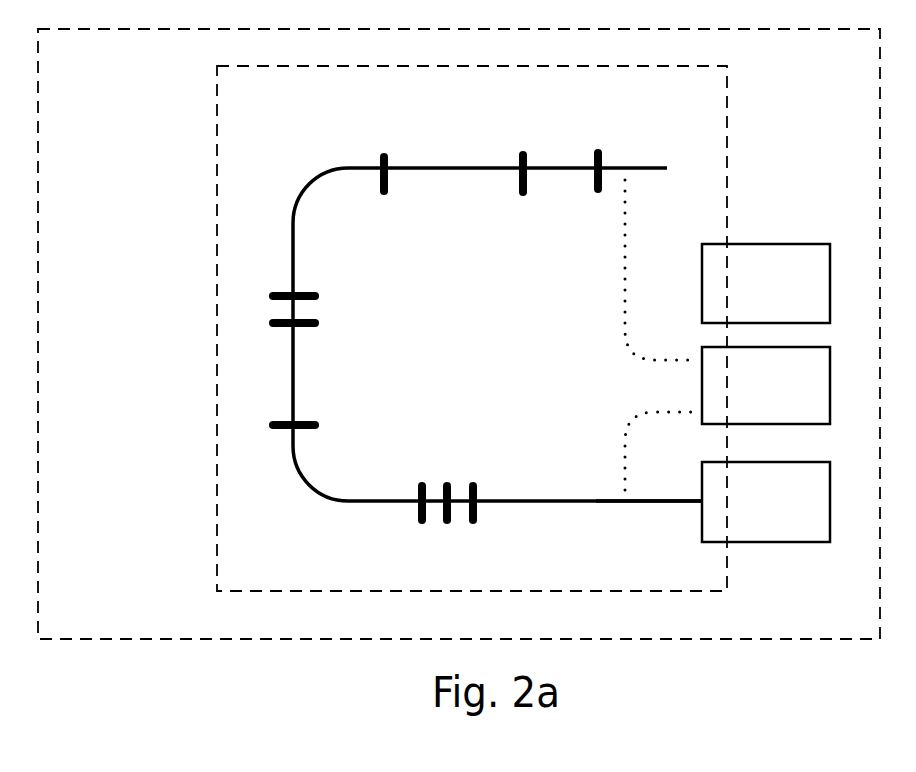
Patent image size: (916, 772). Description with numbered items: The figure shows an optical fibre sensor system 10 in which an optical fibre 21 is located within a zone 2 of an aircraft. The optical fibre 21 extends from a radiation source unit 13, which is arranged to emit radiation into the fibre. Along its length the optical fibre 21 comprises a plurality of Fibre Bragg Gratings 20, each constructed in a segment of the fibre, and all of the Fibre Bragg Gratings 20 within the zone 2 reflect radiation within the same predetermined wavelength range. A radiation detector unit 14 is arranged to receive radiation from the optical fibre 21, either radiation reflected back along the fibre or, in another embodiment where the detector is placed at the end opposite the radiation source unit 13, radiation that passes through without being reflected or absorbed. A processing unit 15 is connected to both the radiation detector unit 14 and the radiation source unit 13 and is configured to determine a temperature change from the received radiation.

The optical fibre sensor system 10 is at (120, 139).
The zone 2 is at (274, 139).
The radiation source unit 13 is at (752, 516).
The radiation detector unit 14 is at (752, 399).
The processing unit 15 is at (752, 297).
The Fibre Bragg Gratings 20 is at (580, 225).
The optical fibre 21 is at (593, 500).